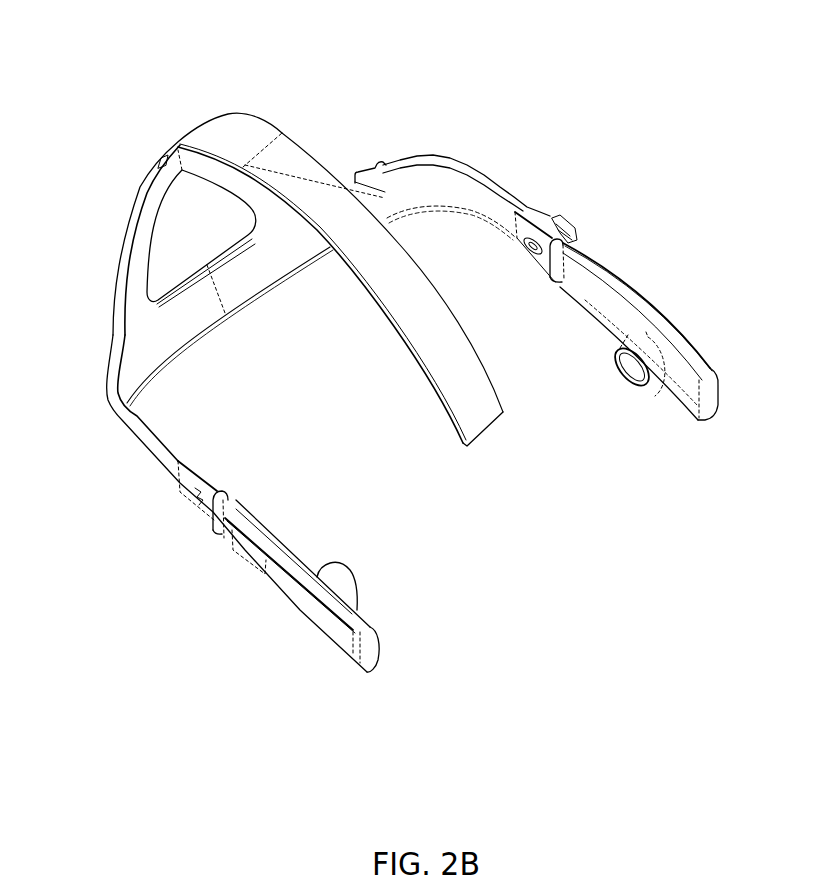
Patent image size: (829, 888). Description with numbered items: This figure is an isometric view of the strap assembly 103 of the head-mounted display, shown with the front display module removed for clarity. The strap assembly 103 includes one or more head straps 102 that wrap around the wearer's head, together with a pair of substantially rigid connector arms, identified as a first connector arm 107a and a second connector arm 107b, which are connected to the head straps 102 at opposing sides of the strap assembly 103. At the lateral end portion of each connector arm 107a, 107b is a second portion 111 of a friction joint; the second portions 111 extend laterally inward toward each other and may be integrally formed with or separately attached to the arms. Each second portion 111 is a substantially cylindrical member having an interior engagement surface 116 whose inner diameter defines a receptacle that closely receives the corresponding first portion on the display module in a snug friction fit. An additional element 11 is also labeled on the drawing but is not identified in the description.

The head strap 102 is at (385, 198).
The strap assembly 103 is at (130, 434).
The first connector arm 107a is at (295, 597).
The second connector arm 107b is at (617, 300).
The protrusion 11 is at (347, 595).
The interior engagement surface 116 is at (623, 372).
The second portion 111 is at (653, 377).